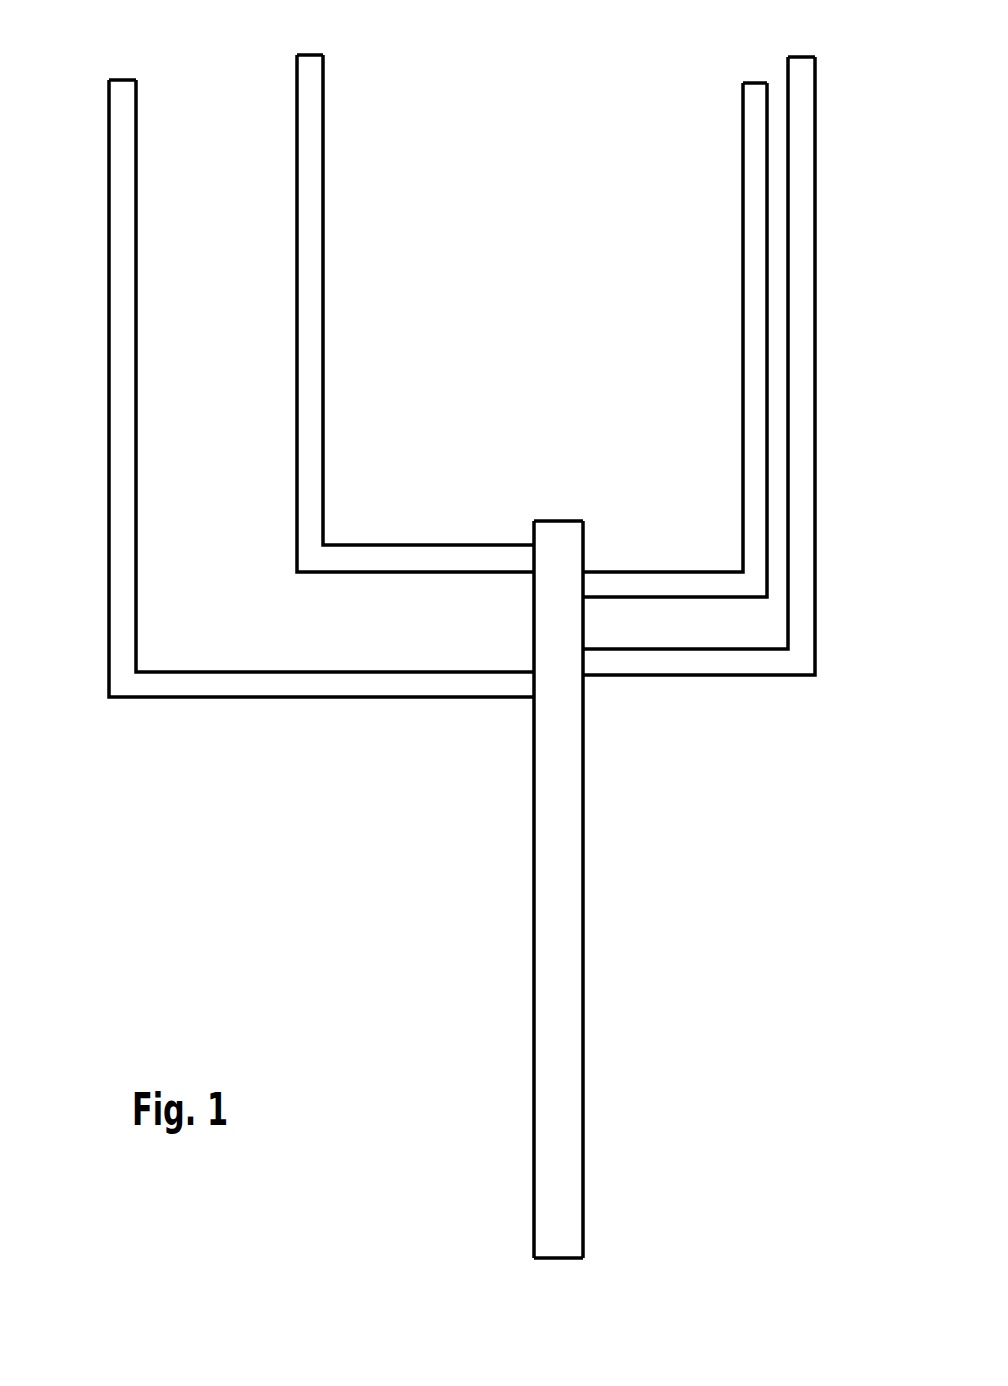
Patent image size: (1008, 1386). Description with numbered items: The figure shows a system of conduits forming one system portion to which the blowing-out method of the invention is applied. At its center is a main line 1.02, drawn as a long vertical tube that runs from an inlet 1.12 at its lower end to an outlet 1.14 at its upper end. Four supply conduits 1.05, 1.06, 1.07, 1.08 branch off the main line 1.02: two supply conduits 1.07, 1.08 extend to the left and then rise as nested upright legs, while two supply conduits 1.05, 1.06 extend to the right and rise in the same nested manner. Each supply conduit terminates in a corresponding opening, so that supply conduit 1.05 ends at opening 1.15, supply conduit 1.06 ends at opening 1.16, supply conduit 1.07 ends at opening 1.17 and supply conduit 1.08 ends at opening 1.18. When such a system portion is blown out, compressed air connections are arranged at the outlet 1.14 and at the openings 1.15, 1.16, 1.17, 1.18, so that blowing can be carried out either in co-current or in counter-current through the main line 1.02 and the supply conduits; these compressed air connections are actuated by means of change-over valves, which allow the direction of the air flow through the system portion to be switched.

The main line 1.02 is at (584, 970).
The outlet 1.14 is at (556, 520).
The inlet 1.12 is at (561, 1259).
The supply conduit 1.08 is at (108, 241).
The opening 1.18 is at (121, 79).
The supply conduit 1.07 is at (325, 242).
The opening 1.17 is at (310, 54).
The supply conduit 1.05 is at (742, 242).
The opening 1.15 is at (752, 82).
The supply conduit 1.06 is at (816, 241).
The opening 1.16 is at (797, 56).